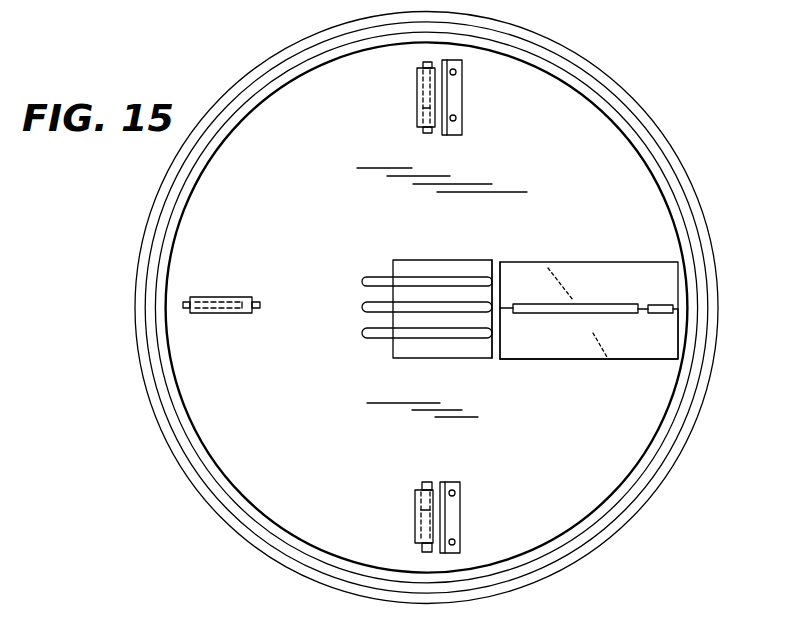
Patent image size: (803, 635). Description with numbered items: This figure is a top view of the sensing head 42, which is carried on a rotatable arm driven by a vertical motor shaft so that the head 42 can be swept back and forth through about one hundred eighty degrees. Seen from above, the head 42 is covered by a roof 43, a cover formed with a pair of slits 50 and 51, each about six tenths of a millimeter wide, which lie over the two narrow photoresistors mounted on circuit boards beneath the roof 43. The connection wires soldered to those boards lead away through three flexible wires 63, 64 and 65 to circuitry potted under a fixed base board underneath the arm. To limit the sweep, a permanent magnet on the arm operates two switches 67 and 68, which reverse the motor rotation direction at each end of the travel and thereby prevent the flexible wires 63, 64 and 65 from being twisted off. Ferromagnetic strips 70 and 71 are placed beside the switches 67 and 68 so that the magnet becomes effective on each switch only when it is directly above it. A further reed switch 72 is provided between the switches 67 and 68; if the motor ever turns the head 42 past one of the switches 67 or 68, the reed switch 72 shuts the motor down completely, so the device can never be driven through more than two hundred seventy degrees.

The sensing head 42 is at (648, 272).
The roof 43 is at (642, 350).
The slit 50 is at (663, 305).
The slit 51 is at (587, 311).
The flexible wire 63 is at (362, 282).
The flexible wire 64 is at (362, 333).
The flexible wire 65 is at (358, 306).
The switch 67 is at (420, 512).
The switch 68 is at (417, 94).
The ferromagnetic strip 70 is at (455, 510).
The ferromagnetic strip 71 is at (453, 98).
The reed switch 72 is at (220, 298).